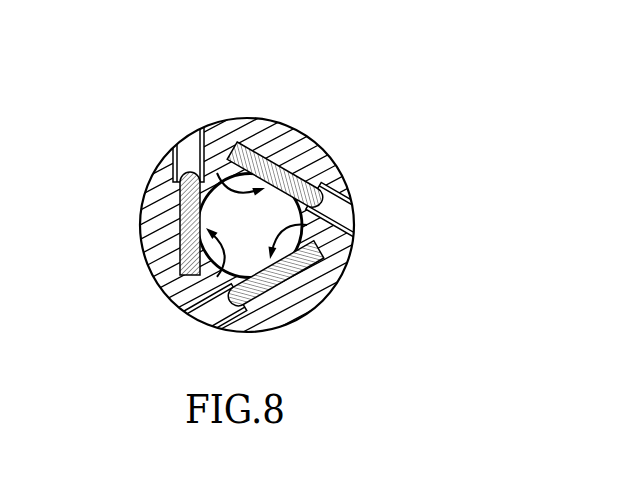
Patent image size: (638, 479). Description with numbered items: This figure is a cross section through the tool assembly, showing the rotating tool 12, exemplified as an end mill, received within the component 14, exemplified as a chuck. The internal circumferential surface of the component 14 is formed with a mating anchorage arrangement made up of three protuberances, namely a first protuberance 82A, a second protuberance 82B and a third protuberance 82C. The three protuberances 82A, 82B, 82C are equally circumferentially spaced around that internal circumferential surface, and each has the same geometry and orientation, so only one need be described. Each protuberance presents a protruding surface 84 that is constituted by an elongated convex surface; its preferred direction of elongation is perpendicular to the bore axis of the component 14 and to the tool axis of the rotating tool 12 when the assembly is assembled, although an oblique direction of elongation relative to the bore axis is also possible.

The rotating tool 12 is at (237, 262).
The component 14 is at (285, 135).
The first protuberance 82A is at (177, 296).
The second protuberance 82B is at (230, 178).
The third protuberance 82C is at (340, 230).
The protruding surface 84 is at (206, 324).